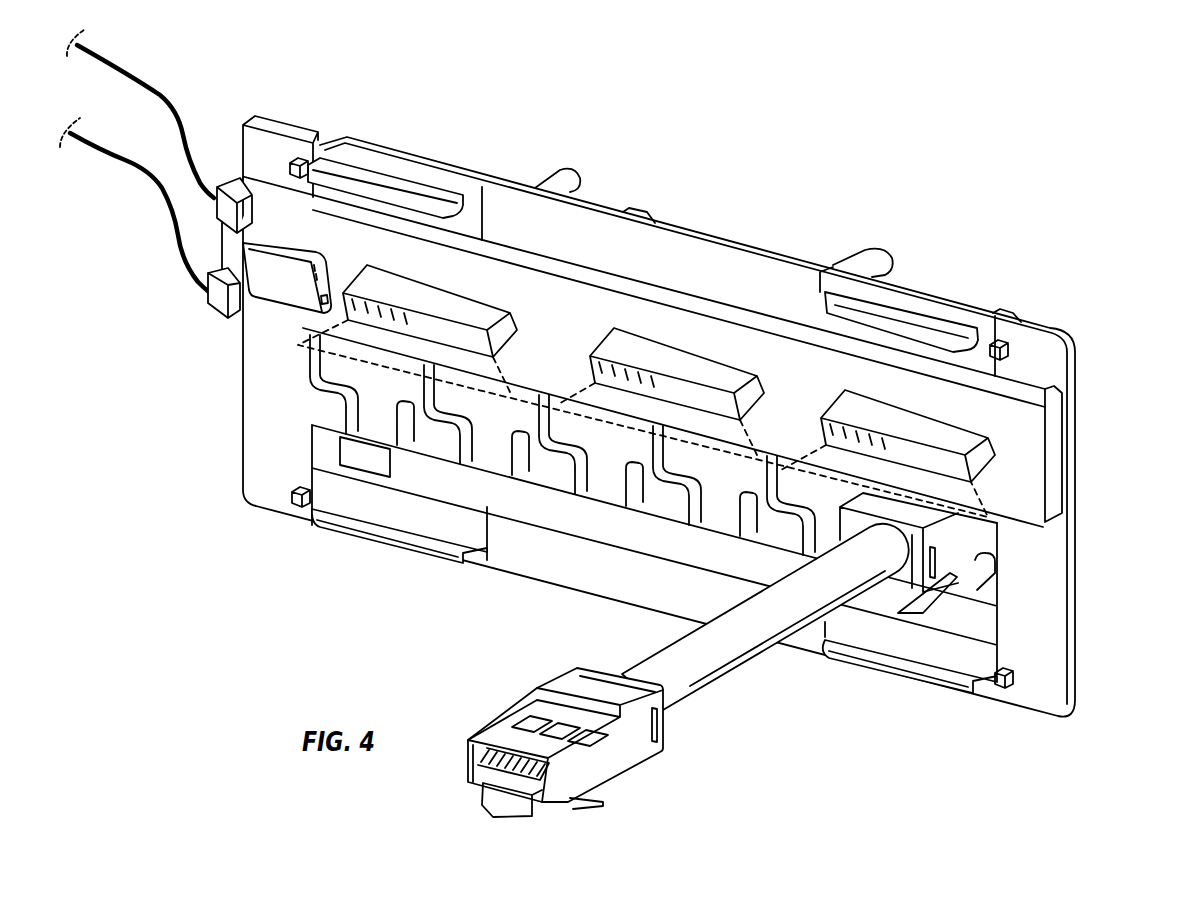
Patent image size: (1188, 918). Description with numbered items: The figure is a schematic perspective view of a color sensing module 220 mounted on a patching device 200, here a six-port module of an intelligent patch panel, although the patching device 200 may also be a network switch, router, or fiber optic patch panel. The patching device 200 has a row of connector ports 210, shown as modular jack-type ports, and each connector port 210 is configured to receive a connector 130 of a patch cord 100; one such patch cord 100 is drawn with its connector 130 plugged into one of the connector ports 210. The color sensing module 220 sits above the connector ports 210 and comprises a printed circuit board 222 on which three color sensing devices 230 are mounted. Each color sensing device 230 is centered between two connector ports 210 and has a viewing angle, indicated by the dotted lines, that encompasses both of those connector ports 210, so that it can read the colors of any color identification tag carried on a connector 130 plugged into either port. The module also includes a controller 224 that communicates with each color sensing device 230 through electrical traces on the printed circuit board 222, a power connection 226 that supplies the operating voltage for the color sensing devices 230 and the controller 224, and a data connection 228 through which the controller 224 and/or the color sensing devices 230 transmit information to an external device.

The patch cord 100 is at (747, 643).
The connector 130 is at (590, 772).
The patching device 200 is at (598, 222).
The connector ports 210 is at (370, 407).
The color sensing module 220 is at (1040, 393).
The printed circuit board 222 is at (305, 320).
The controller 224 is at (273, 286).
The power connection 226 is at (213, 303).
The data connection 228 is at (229, 190).
The color sensing devices 230 is at (711, 377).